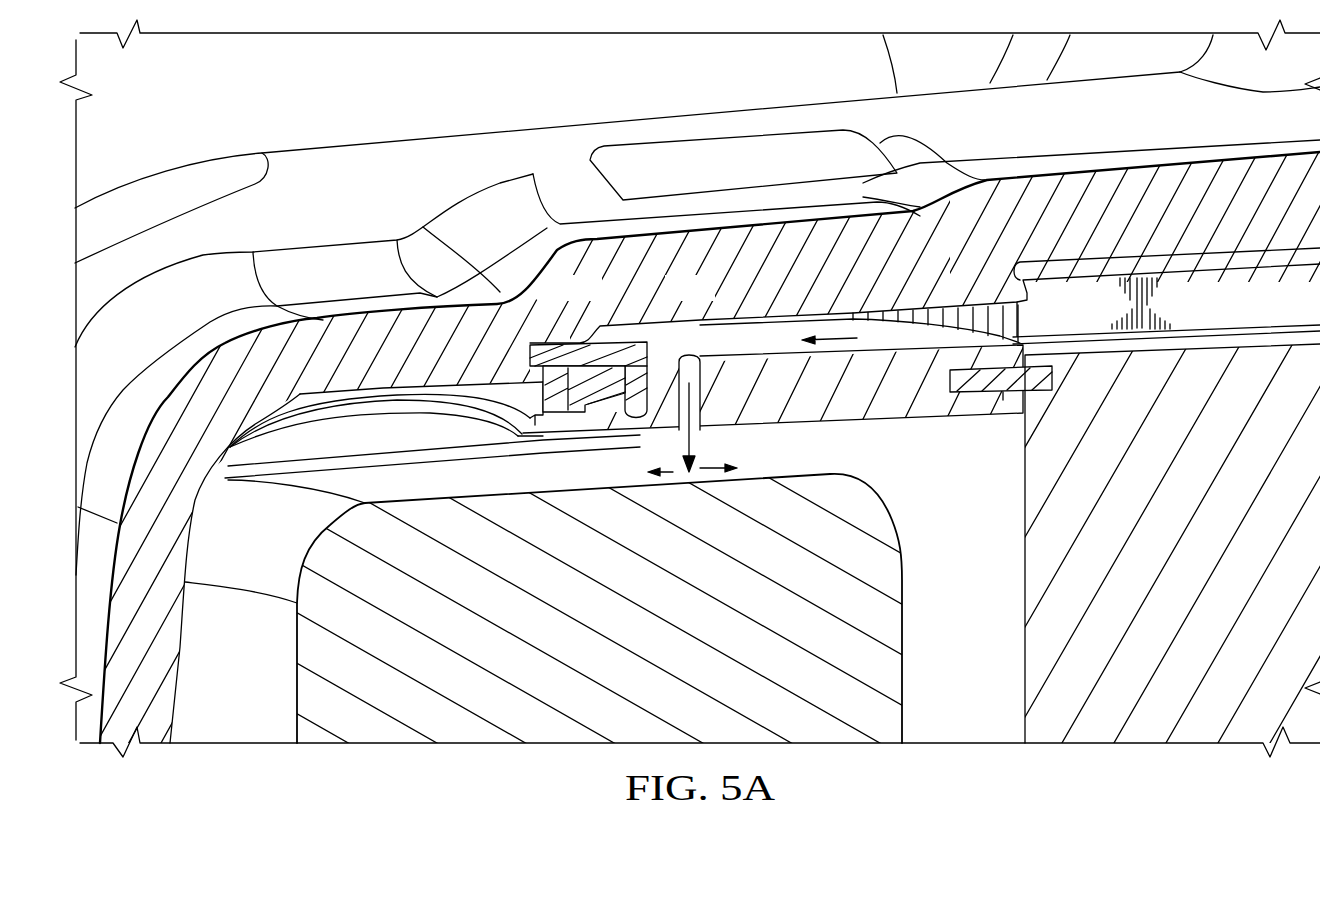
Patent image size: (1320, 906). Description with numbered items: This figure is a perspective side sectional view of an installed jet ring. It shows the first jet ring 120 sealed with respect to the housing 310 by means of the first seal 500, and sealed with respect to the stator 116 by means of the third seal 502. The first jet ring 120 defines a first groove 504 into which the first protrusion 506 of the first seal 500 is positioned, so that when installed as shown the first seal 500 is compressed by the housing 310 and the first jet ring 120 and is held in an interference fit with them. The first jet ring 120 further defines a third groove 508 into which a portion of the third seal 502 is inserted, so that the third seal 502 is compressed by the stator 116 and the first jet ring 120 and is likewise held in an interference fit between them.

The housing 310 is at (167, 690).
The first jet ring 120 is at (875, 408).
The first seal 500 is at (592, 344).
The first groove 504 is at (642, 408).
The first protrusion 506 is at (628, 390).
The third seal 502 is at (1052, 377).
The third groove 508 is at (1003, 392).
The stator 116 is at (1108, 735).